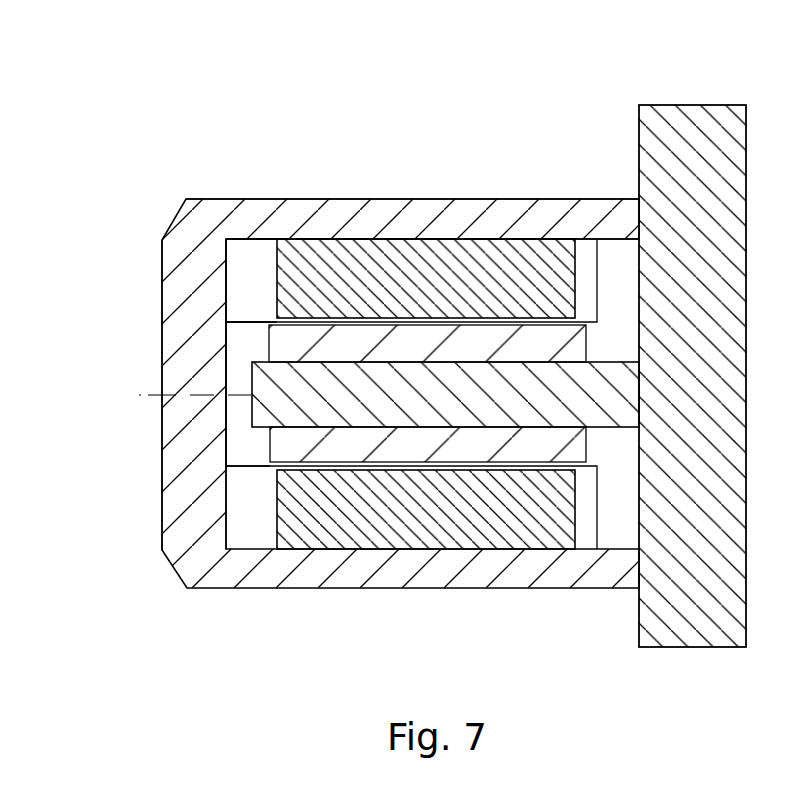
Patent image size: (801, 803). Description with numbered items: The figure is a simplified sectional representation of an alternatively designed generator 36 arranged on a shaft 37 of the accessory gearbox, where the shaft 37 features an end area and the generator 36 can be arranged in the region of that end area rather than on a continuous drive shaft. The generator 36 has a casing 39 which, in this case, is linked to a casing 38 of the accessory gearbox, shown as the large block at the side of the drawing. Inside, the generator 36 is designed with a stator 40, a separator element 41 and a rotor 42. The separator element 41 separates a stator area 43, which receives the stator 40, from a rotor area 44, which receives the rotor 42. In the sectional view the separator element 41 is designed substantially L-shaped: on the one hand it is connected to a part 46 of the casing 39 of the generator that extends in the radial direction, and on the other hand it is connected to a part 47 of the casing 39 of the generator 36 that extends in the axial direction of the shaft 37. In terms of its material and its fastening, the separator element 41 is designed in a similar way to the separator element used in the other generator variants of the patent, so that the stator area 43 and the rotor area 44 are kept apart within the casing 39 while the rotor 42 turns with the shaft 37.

The generator 36 is at (402, 349).
The shaft 37 is at (283, 408).
The casing of the accessory gearbox 38 is at (693, 117).
The casing 39 is at (533, 199).
The stator 40 is at (410, 262).
The separator element 41 is at (558, 312).
The rotor 42 is at (367, 533).
The stator area 43 is at (262, 276).
The rotor area 44 is at (262, 348).
The part of the casing extending in the radial direction 46 is at (187, 285).
The part of the casing extending in the axial direction 47 is at (305, 215).